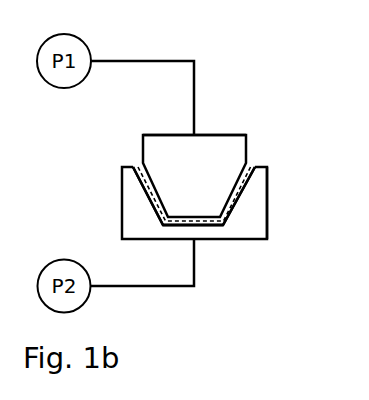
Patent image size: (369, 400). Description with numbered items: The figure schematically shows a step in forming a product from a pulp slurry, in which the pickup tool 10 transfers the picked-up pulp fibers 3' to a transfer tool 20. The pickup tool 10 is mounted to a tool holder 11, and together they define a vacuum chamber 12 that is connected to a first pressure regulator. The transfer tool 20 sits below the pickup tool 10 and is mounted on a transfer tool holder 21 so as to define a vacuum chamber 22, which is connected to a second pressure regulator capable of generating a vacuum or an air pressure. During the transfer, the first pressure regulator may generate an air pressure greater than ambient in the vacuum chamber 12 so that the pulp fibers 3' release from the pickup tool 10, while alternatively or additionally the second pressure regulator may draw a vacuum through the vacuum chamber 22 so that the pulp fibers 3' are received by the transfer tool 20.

The pickup tool 10 is at (146, 180).
The tool holder 11 is at (208, 135).
The vacuum chamber 12 is at (217, 158).
The transfer tool 20 is at (247, 191).
The transfer tool holder 21 is at (267, 222).
The vacuum chamber 22 is at (213, 232).
The formed blank 3' is at (205, 232).